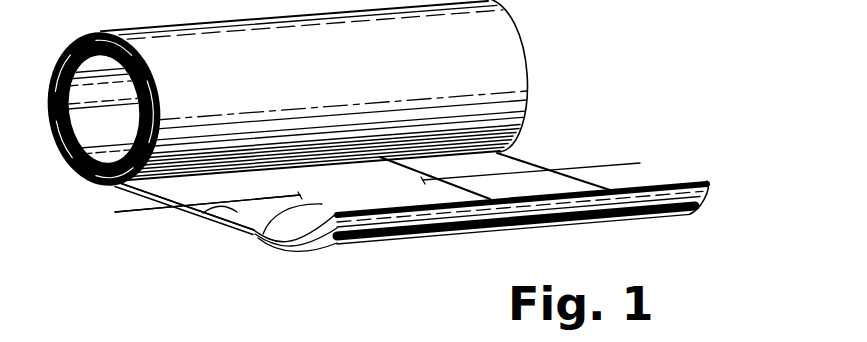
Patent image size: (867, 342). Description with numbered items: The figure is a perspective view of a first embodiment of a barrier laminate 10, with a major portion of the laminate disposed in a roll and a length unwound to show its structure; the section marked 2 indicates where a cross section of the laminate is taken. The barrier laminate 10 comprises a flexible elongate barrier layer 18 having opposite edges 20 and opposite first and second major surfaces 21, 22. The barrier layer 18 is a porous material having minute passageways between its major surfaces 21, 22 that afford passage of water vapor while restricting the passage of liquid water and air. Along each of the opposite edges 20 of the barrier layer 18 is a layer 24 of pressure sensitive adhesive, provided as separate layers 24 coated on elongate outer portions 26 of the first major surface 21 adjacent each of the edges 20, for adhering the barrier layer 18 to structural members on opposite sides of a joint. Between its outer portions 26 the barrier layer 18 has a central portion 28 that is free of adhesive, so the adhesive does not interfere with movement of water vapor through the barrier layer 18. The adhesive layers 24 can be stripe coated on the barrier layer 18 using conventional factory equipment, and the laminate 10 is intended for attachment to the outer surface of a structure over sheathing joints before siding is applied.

The barrier laminate 10 is at (622, 72).
The barrier layer 18 is at (482, 238).
The opposite edges 20 is at (244, 233).
The first major surface 21 is at (265, 240).
The second major surface 22 is at (550, 226).
The layer of pressure sensitive adhesive 24 is at (190, 213).
The elongate outer portions 26 is at (397, 218).
The central portion 28 is at (377, 198).
The section line 2- 2 is at (115, 212).